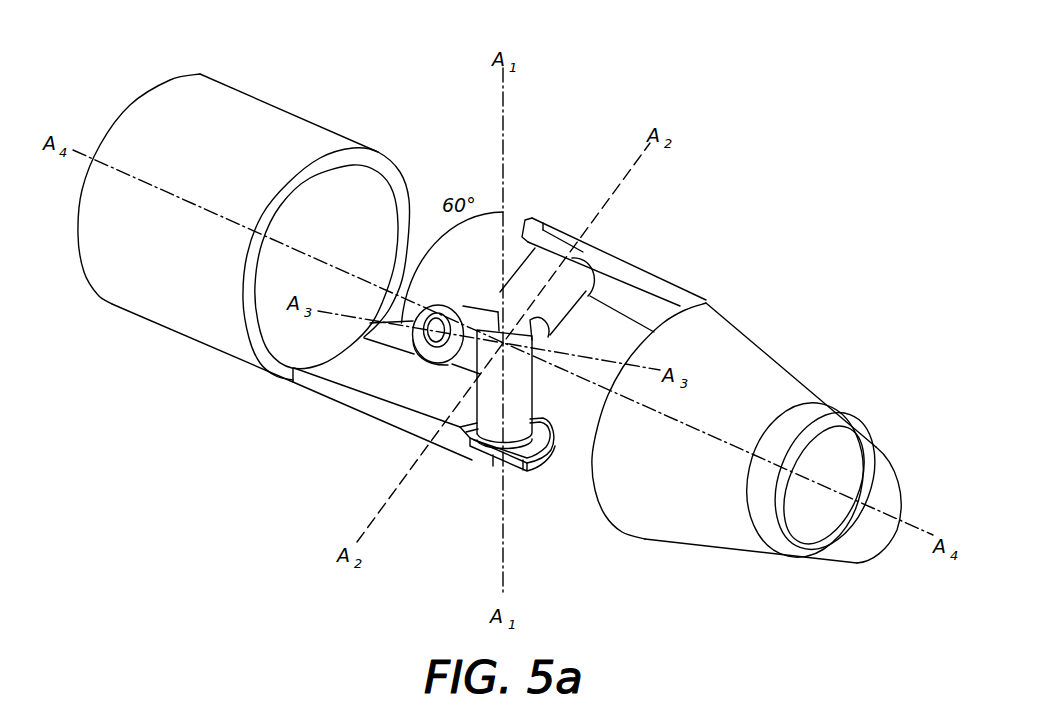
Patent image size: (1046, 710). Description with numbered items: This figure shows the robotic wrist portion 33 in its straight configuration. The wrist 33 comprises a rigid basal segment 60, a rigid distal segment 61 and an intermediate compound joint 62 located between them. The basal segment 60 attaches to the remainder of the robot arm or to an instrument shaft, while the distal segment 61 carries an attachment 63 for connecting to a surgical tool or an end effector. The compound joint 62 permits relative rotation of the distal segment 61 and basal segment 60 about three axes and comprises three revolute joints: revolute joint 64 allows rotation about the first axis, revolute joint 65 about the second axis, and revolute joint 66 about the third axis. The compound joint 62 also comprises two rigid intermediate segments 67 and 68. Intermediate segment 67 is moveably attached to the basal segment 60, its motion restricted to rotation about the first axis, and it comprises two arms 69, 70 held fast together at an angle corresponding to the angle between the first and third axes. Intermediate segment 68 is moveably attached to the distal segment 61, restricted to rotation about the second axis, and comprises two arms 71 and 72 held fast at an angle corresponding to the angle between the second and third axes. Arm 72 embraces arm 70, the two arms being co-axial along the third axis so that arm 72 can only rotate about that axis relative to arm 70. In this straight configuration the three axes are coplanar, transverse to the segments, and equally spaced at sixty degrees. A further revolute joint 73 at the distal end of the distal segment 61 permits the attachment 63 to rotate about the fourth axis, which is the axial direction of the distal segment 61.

The wrist portion 33 is at (506, 309).
The basal segment 60 is at (250, 102).
The distal segment 61 is at (763, 433).
The intermediate compound joint 62 is at (499, 289).
The attachment 63 is at (890, 467).
The revolute joint 64 is at (478, 456).
The revolute joint 65 is at (550, 223).
The revolute joint 66 is at (424, 358).
The intermediate segment 67 is at (510, 386).
The intermediate segment 68 is at (500, 312).
The arm 69 is at (520, 407).
The arm 70 is at (477, 368).
The arm 71 is at (563, 306).
The arm 72 is at (470, 307).
The further revolute joint 73 is at (826, 408).